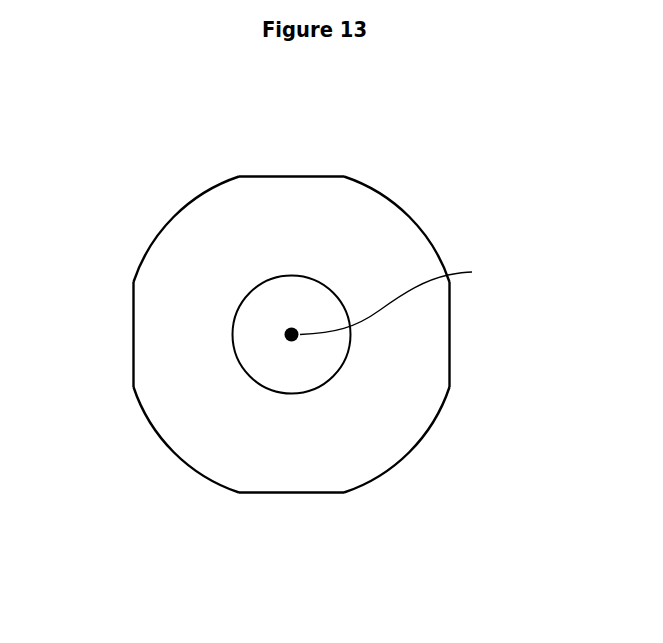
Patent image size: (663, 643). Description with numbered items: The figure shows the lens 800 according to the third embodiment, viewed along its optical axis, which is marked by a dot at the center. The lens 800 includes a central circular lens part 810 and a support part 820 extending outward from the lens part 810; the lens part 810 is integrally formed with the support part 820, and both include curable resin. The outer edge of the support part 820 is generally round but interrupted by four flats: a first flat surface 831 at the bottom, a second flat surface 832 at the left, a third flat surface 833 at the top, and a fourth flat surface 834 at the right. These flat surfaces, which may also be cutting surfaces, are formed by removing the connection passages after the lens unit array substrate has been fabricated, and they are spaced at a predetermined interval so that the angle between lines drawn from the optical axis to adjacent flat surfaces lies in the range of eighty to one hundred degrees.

The lens 800 is at (153, 190).
The lens part 810 is at (263, 353).
The support part 820 is at (185, 255).
The first flat surface 831 is at (292, 492).
The second flat surface 832 is at (134, 334).
The third flat surface 833 is at (292, 176).
The fourth flat surface 834 is at (450, 334).